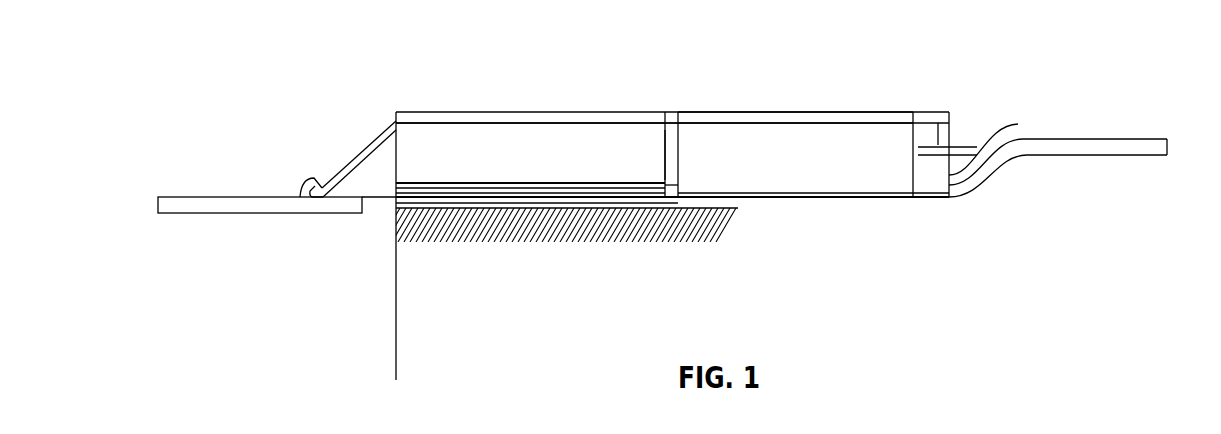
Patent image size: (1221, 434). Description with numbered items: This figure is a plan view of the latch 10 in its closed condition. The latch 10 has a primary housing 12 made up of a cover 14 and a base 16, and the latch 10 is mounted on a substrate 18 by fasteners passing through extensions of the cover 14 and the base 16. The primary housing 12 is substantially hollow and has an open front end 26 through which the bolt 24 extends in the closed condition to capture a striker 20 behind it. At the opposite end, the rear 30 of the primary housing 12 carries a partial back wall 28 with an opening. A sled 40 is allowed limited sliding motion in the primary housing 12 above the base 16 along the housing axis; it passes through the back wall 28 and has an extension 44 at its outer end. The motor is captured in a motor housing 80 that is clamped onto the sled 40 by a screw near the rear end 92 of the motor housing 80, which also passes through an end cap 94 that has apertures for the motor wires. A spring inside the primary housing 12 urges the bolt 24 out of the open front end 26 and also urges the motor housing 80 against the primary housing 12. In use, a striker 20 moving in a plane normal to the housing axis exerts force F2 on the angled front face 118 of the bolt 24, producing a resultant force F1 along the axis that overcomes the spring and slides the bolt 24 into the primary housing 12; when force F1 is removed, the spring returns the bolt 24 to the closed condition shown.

The latch 10 is at (566, 82).
The primary housing 12 is at (628, 111).
The cover 14 is at (450, 111).
The base 16 is at (393, 205).
The substrate 18 is at (720, 220).
The striker 20 is at (197, 215).
The bolt 24 is at (367, 130).
The open front end 26 is at (398, 168).
The partial back wall 28 is at (665, 162).
The rear 30 is at (680, 111).
The sled 40 is at (955, 200).
The extension 44 is at (1097, 139).
The motor housing 80 is at (820, 111).
The rear end of motor housing 92 is at (945, 111).
The end cap 94 is at (1020, 124).
The angled front face 118 is at (293, 197).
The retracting force F1 is at (327, 158).
The striker force F2 is at (343, 143).